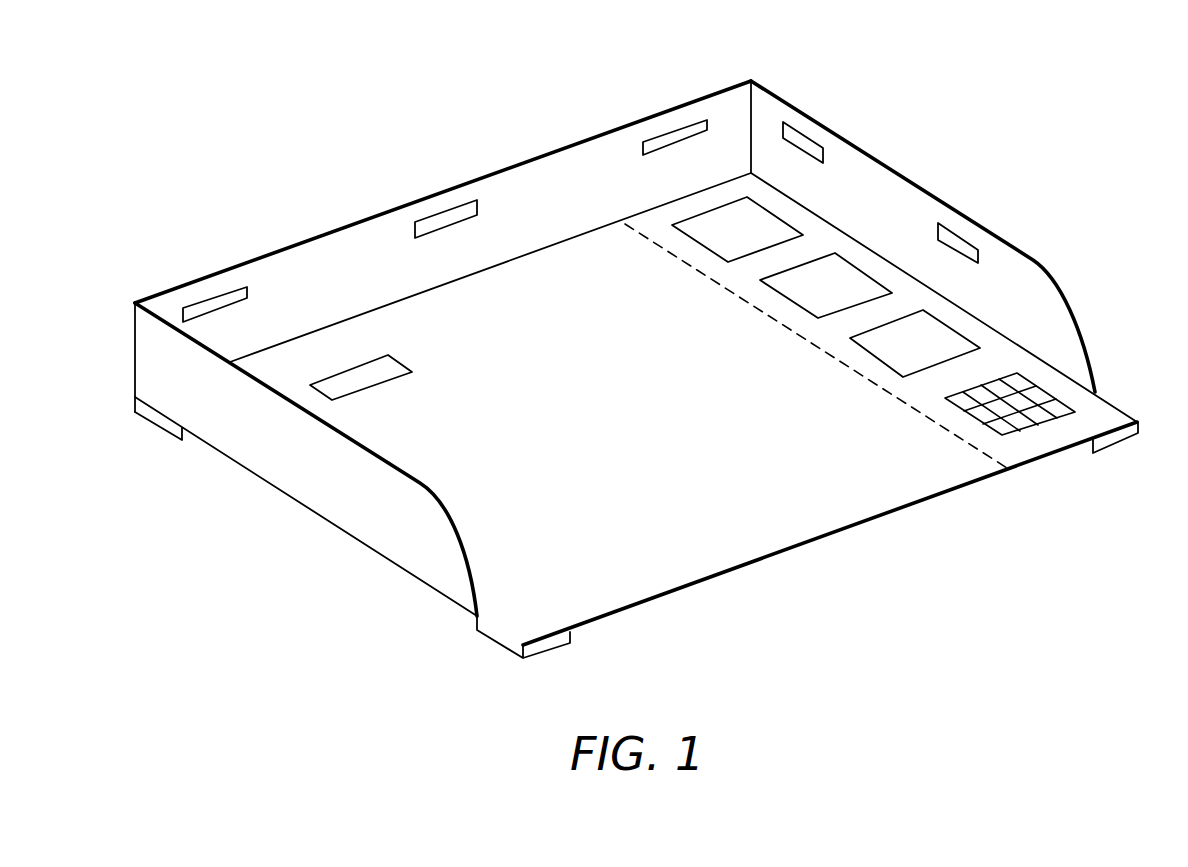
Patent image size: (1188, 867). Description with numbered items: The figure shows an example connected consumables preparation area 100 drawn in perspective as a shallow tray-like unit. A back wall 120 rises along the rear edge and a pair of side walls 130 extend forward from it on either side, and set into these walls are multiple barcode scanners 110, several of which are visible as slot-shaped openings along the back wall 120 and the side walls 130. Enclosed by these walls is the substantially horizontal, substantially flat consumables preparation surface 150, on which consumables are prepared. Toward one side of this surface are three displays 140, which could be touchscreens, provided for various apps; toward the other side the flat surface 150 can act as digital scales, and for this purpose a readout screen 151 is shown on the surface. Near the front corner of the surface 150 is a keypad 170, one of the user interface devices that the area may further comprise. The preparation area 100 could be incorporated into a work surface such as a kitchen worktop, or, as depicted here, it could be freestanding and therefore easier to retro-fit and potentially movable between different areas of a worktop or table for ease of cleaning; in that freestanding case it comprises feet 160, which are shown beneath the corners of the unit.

The connected consumables preparation area 100 is at (281, 99).
The barcode scanners 110 is at (216, 299).
The back wall 120 is at (467, 267).
The side walls 130 is at (322, 467).
The displays 140 is at (760, 243).
The consumables preparation surface 150 is at (638, 414).
The readout screen 151 is at (373, 378).
The feet 160 is at (158, 418).
The keypad 170 is at (1033, 420).